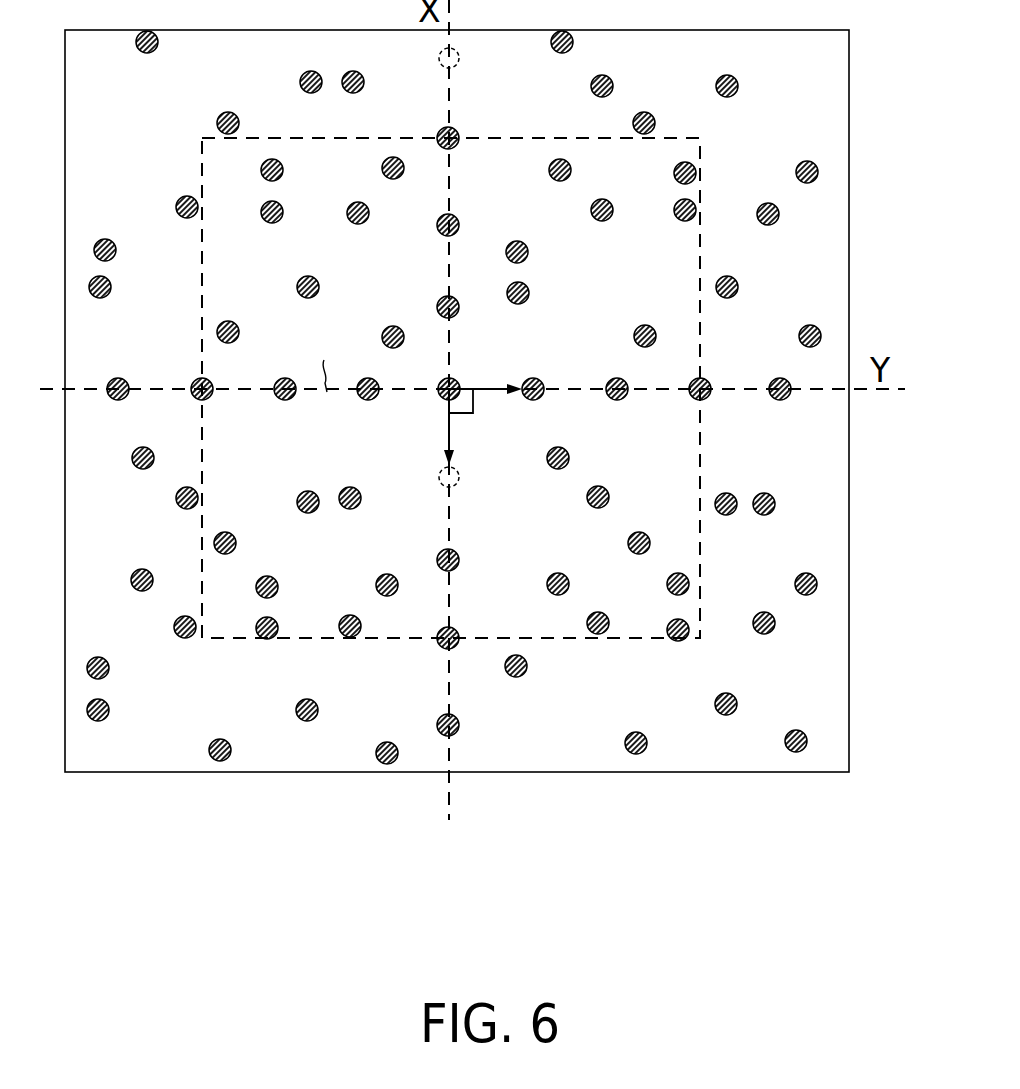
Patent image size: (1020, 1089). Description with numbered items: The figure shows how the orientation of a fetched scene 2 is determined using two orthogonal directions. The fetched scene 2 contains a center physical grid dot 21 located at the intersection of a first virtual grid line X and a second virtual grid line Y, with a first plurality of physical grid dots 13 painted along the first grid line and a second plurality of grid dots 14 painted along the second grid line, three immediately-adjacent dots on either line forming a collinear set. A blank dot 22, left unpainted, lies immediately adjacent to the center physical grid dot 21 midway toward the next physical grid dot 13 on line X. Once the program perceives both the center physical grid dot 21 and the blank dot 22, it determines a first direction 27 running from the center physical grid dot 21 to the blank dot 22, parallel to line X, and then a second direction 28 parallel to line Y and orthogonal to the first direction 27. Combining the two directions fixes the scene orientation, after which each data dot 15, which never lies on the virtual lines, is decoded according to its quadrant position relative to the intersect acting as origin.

The fetched scene 2 is at (700, 424).
The first plurality of physical grid dots 13 is at (446, 150).
The second plurality of grid dots 14 is at (362, 399).
The data dots 15 is at (377, 585).
The center physical grid dot 21 is at (452, 384).
The blank dot 22 is at (453, 66).
The first direction 27 is at (447, 428).
The second direction 28 is at (495, 392).